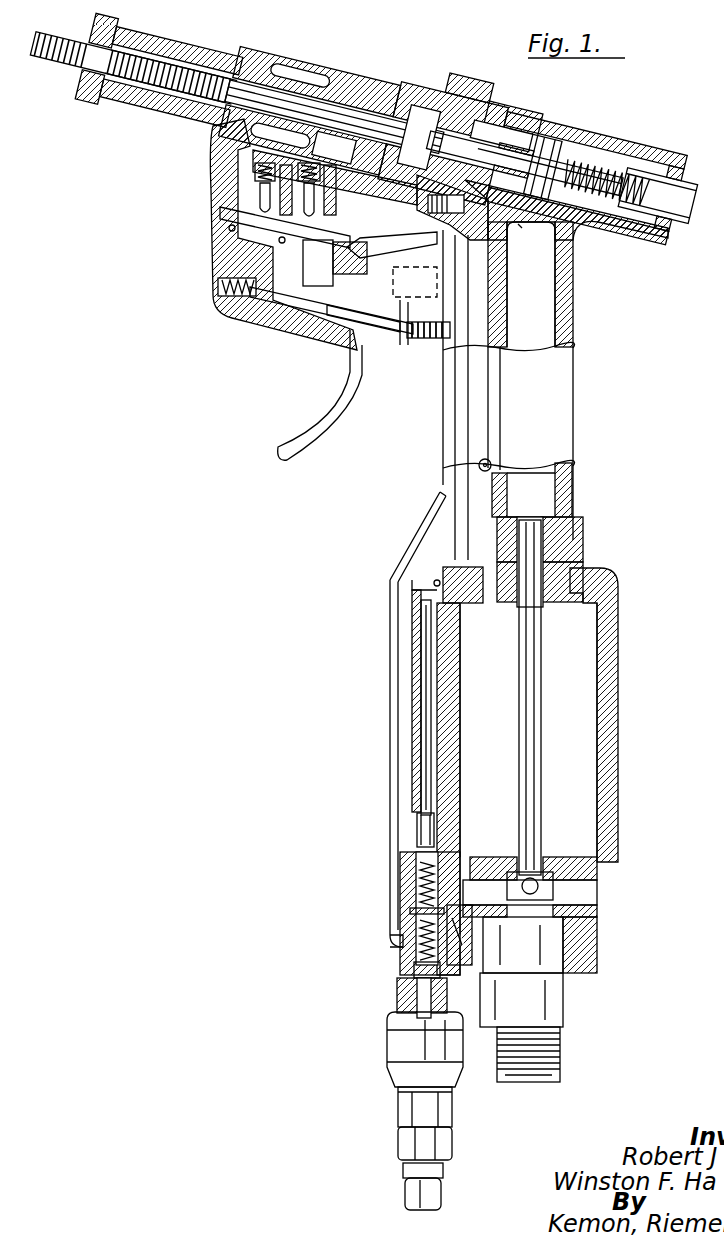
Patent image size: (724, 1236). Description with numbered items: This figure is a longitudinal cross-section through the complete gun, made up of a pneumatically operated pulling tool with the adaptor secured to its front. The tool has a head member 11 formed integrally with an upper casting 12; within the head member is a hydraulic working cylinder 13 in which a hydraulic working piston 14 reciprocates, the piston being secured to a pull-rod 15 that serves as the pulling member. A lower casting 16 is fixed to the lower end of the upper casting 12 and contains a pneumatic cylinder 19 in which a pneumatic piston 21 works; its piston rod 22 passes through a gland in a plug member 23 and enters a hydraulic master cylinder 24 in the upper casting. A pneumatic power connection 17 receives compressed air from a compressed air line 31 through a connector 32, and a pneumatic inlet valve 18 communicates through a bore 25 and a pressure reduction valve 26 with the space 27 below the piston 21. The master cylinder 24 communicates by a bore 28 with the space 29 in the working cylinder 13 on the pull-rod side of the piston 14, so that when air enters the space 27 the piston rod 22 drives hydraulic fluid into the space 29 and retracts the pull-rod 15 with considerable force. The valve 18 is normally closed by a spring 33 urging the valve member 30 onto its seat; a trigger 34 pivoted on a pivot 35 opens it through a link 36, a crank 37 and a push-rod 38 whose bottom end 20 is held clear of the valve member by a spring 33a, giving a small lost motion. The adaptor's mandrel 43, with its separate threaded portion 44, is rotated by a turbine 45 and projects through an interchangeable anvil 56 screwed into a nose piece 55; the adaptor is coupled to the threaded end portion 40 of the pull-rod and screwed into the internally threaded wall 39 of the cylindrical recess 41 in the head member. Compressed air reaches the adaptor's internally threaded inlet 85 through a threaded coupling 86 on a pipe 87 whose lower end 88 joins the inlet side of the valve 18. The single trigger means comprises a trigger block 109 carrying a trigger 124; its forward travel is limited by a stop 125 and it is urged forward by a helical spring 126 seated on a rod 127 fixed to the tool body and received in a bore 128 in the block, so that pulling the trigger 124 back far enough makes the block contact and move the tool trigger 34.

The head member 11 is at (541, 137).
The upper casting 12 is at (590, 295).
The working cylinder 13 is at (623, 148).
The hydraulic working piston 14 is at (612, 152).
The pull-rod 15 is at (494, 142).
The lower casting 16 is at (612, 653).
The pneumatic power connection 17 is at (407, 998).
The pneumatic inlet valve 18 is at (410, 953).
The pneumatic cylinder 19 is at (588, 784).
The bottom end of push-rod 20 is at (423, 919).
The pneumatic piston 21 is at (593, 891).
The piston rod 22 is at (537, 664).
The plug member 23 is at (552, 547).
The hydraulic master cylinder 24 is at (544, 483).
The bore 25 is at (455, 934).
The pressure reduction valve 26 is at (563, 958).
The space 27 is at (587, 916).
The bore 28 is at (531, 284).
The space 29 is at (551, 152).
The valve member 30 is at (405, 931).
The compressed air line 31 is at (437, 1191).
The connector 32 is at (437, 1106).
The spring 33 is at (420, 973).
The spring 33a is at (427, 904).
The trigger 34 is at (414, 338).
The pivot 35 is at (347, 250).
The link 36 is at (470, 498).
The crank 37 is at (430, 570).
The push-rod 38 is at (423, 721).
The internally threaded wall 39 is at (484, 132).
The threaded end portion 40 is at (487, 128).
The cylindrical recess 41 is at (490, 140).
The mandrel 43 is at (344, 89).
The threaded portion 44 is at (58, 64).
The turbine 45 is at (304, 66).
The nose piece 55 is at (140, 96).
The interchangeable anvil 56 is at (97, 86).
The internally threaded inlet 85 is at (303, 140).
The threaded coupling 86 is at (410, 187).
The pipe 87 is at (397, 658).
The lower end of pipe 88 is at (403, 947).
The trigger block 109 is at (232, 304).
The trigger 124 is at (332, 364).
The stop 125 is at (222, 248).
The helical spring 126 is at (382, 330).
The rod 127 is at (400, 345).
The bore 128 is at (283, 300).